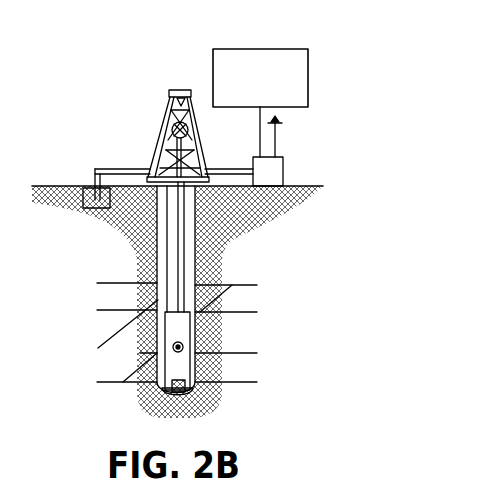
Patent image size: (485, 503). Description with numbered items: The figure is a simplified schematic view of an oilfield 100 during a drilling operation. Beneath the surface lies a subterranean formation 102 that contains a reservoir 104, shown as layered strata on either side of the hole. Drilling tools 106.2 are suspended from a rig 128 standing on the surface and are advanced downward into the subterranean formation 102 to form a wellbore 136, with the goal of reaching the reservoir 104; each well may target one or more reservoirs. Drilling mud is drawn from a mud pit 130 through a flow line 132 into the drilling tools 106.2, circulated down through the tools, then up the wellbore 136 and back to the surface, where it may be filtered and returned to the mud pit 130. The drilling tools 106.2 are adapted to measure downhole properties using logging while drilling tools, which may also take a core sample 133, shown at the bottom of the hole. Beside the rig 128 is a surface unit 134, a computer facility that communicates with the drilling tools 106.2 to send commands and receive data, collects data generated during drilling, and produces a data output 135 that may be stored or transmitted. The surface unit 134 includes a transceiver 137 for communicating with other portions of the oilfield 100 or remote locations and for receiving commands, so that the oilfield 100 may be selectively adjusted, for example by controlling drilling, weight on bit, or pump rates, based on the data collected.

The oilfield 100 is at (98, 100).
The subterranean formation 102 is at (270, 279).
The reservoir 104 is at (258, 343).
The drilling tools 106.2 is at (163, 340).
The rig 128 is at (159, 138).
The mud pit 130 is at (92, 210).
The flow line 132 is at (93, 171).
The core sample 133 is at (157, 395).
The surface unit 134 is at (284, 173).
The data output 135 is at (278, 48).
The wellbore 136 is at (195, 228).
The transceiver 137 is at (276, 135).